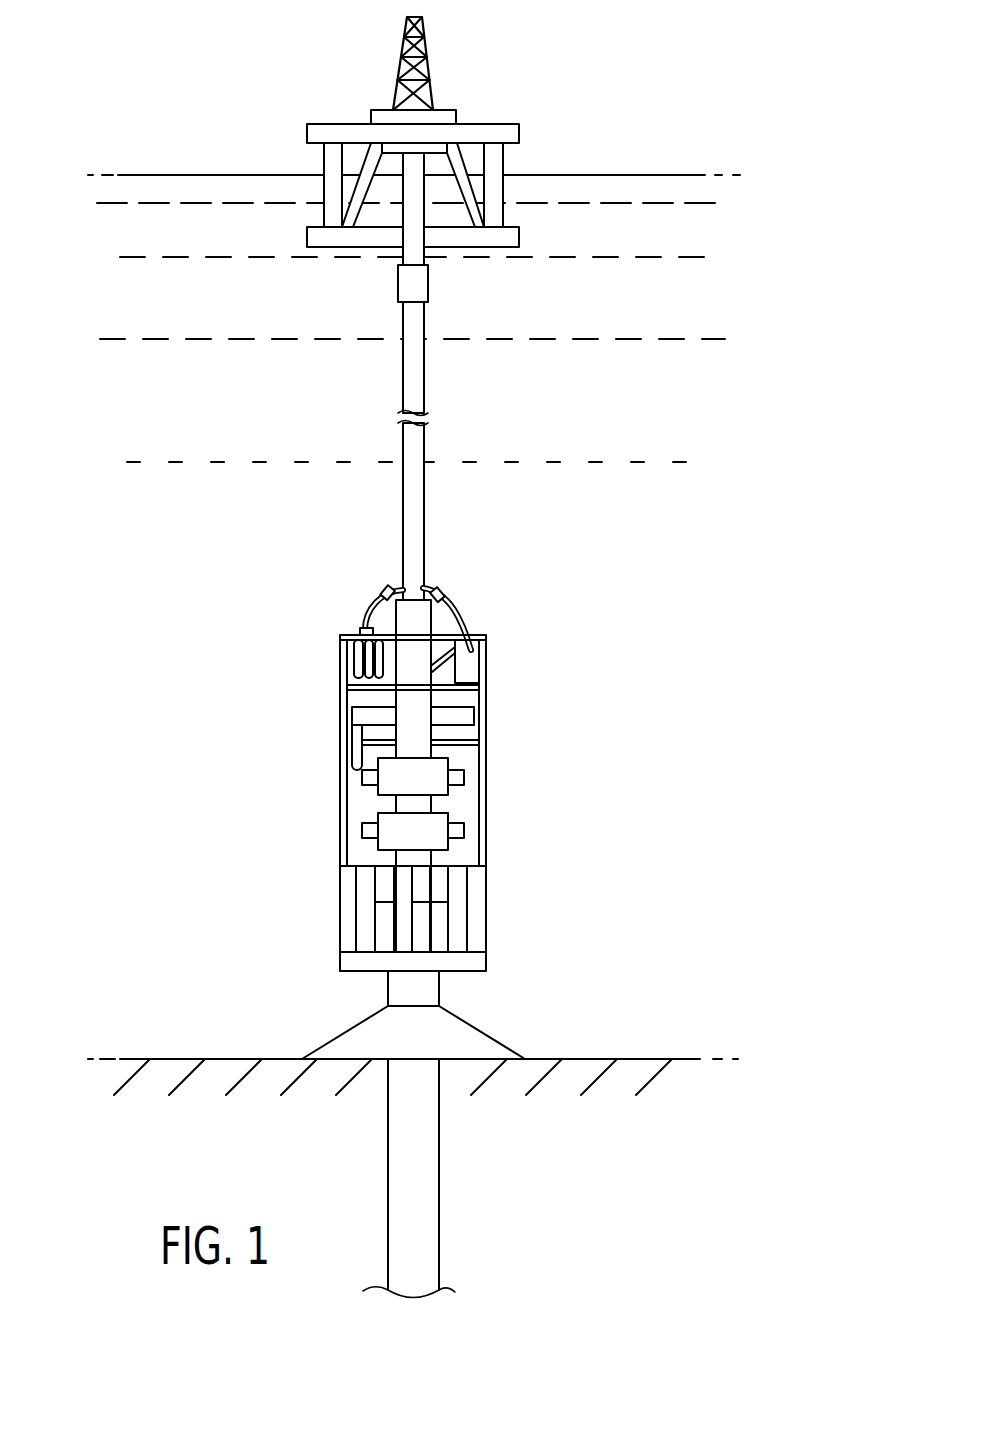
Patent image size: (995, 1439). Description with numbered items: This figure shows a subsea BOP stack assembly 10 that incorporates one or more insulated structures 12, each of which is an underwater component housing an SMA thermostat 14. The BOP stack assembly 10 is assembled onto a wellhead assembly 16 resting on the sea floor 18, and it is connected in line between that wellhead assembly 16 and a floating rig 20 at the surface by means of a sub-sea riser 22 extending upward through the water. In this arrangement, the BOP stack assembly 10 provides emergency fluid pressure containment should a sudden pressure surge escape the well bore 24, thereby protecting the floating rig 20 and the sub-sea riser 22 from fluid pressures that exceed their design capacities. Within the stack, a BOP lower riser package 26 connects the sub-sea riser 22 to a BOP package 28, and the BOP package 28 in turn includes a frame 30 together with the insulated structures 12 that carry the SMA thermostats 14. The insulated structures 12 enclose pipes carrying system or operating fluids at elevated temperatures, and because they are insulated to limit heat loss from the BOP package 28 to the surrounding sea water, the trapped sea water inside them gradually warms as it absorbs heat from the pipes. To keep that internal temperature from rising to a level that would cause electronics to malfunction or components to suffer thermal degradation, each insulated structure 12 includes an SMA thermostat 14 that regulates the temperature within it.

The subsea BOP stack assembly 10 is at (448, 778).
The insulated structure 12 is at (464, 777).
The SMA thermostat 14 is at (385, 769).
The wellhead assembly 16 is at (347, 1033).
The sea floor 18 is at (603, 1059).
The floating rig 20 is at (505, 92).
The sub-sea riser 22 is at (426, 358).
The well bore 24 is at (439, 1175).
The BOP lower riser package 26 is at (340, 675).
The BOP package 28 is at (486, 800).
The frame 30 is at (340, 800).